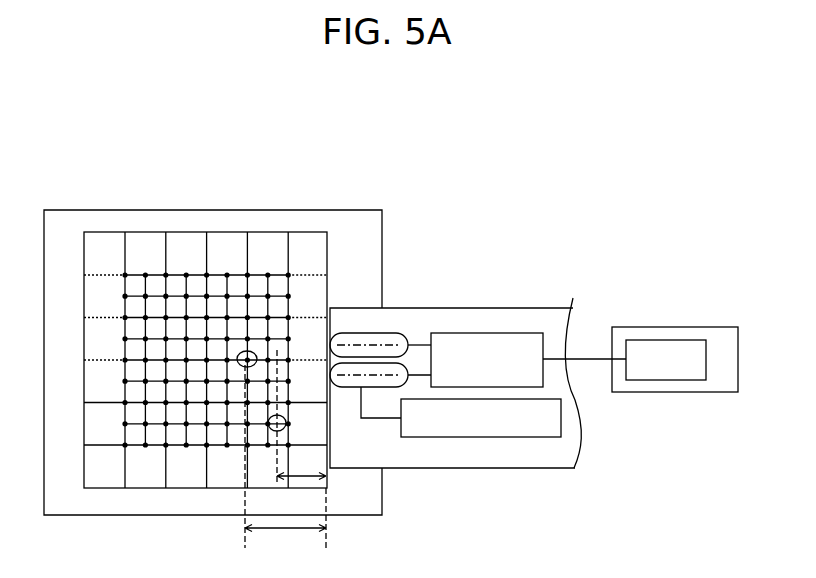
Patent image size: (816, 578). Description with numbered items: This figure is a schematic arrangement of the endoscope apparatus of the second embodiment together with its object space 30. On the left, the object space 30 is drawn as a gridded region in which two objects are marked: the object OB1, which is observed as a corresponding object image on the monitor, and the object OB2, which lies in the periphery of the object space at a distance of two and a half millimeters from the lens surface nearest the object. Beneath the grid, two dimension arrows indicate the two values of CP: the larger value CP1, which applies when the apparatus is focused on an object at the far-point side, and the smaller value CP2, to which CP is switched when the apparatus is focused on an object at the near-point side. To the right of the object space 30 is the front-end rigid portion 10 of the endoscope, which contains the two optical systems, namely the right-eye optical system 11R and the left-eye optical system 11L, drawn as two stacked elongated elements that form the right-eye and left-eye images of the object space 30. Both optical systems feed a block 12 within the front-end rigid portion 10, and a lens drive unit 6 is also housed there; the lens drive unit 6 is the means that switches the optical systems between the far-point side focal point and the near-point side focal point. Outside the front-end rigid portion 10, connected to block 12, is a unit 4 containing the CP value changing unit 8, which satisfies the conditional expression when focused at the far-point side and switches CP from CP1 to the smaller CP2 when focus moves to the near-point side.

The object space 30 is at (157, 232).
The object OB1 is at (246, 351).
The object OB2 is at (277, 431).
The value of CP CP1 is at (304, 545).
The value of CP CP2 is at (351, 494).
The front-end rigid portion 10 is at (500, 308).
The right-eye optical system 11R is at (386, 333).
The left-eye optical system 11L is at (345, 387).
The detection circuit 12 is at (523, 333).
The lens drive unit 6 is at (561, 418).
The host device 4 is at (715, 327).
The CP value changing unit 8 is at (662, 340).